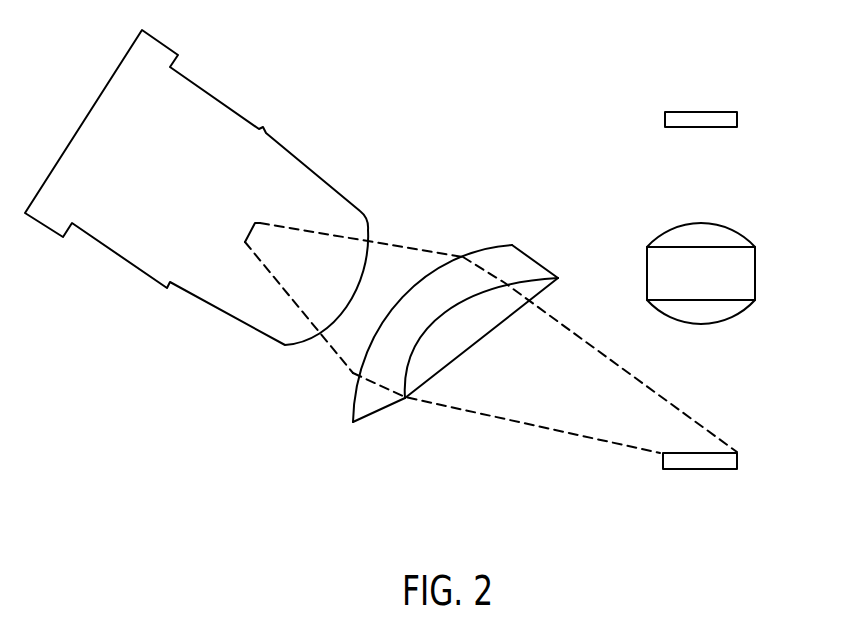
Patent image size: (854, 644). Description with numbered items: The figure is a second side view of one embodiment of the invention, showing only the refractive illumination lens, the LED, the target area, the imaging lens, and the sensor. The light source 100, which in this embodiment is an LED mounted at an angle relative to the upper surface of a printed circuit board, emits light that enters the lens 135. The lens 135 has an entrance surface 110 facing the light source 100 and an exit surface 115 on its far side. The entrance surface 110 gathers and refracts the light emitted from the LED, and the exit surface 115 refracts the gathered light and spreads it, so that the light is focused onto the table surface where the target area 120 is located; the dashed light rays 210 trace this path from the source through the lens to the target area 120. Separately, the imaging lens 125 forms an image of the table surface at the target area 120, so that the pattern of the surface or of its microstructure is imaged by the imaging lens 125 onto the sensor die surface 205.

The light source 100 is at (307, 168).
The entrance surface 110 is at (353, 352).
The exit surface 115 is at (447, 347).
The lens 135 is at (365, 398).
The target area 120 is at (707, 470).
The imaging lens 125 is at (757, 273).
The sensor die surface 205 is at (710, 110).
The light ray 210 is at (615, 363).